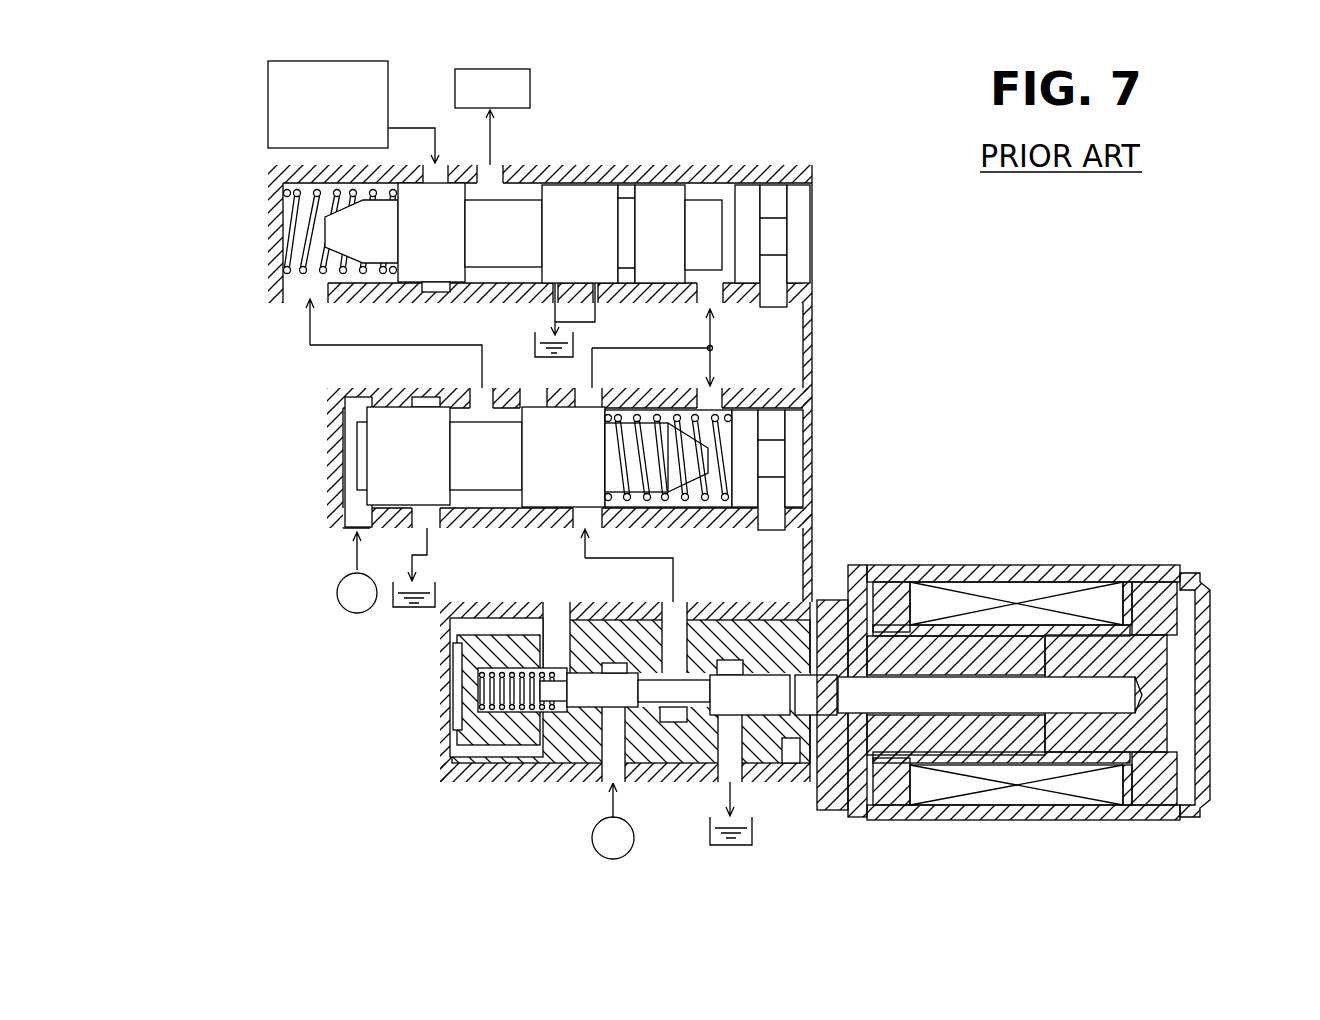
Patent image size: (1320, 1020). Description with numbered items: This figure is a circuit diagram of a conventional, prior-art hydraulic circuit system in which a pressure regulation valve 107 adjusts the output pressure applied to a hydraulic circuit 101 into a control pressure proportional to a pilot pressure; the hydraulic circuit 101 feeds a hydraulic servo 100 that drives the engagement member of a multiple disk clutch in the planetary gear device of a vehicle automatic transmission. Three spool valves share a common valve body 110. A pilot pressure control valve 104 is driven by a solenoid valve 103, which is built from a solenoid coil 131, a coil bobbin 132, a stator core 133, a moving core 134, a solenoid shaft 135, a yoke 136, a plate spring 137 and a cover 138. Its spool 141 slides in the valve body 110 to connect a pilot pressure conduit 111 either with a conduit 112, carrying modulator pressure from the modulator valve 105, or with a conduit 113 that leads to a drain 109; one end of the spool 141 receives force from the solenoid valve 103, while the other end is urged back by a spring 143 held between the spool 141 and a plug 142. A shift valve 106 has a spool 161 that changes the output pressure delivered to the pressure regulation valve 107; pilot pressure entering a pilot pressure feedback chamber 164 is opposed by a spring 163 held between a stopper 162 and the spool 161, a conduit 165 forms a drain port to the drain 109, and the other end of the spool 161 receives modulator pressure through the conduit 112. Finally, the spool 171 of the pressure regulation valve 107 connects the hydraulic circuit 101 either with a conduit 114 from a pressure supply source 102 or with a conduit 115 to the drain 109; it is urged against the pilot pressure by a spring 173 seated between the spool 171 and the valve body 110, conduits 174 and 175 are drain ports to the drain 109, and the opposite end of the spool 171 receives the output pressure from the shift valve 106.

The hydraulic servo 100 is at (530, 88).
The hydraulic circuit 101 is at (490, 138).
The pressure supply source 102 is at (268, 128).
The solenoid valve 103 is at (1053, 544).
The pilot pressure control valve 104 is at (456, 801).
The modulator valve 105 is at (357, 613).
The shift valve 106 is at (315, 380).
The pressure regulation valve 107 is at (791, 146).
The drain 109 is at (573, 345).
The valve body 110 is at (800, 172).
The pilot pressure conduit 111 is at (672, 577).
The conduit 112 is at (346, 555).
The conduit 113 is at (723, 798).
The conduit 114 is at (412, 130).
The conduit 115 is at (545, 322).
The solenoid coil 131 is at (1003, 603).
The coil bobbin 132 is at (1120, 585).
The stator core 133 is at (920, 603).
The moving core 134 is at (1160, 665).
The solenoid shaft 135 is at (970, 690).
The yoke 136 is at (1155, 575).
The plate spring 137 is at (1155, 805).
The cover 138 is at (1205, 615).
The spool 141 is at (590, 697).
The plug 142 is at (452, 700).
The spring 143 is at (498, 735).
The spool 161 is at (495, 480).
The stopper 162 is at (805, 445).
The spring 163 is at (714, 500).
The pilot pressure feedback chamber 164 is at (728, 485).
The conduit 165 is at (427, 528).
The spool 171 is at (627, 188).
The spring 173 is at (350, 290).
The conduit 174 is at (537, 305).
The conduit 175 is at (595, 293).